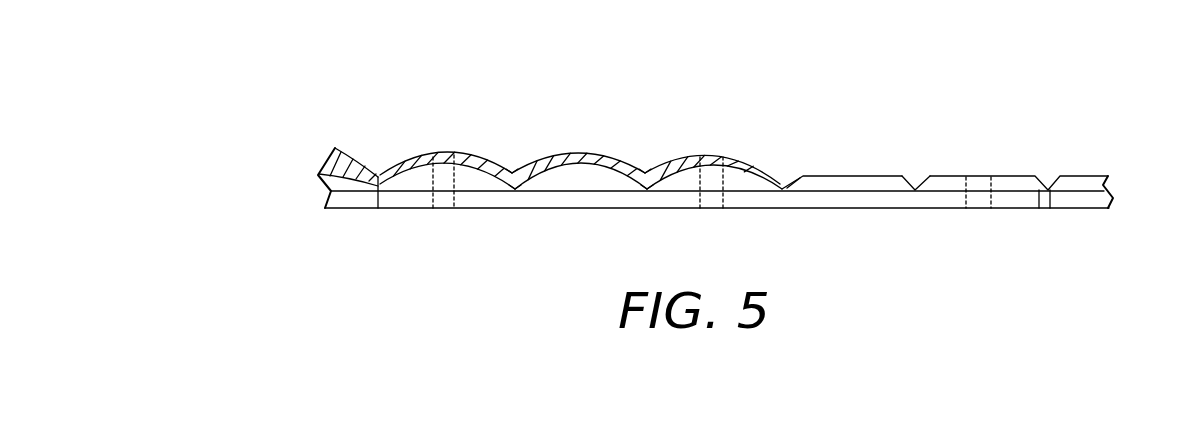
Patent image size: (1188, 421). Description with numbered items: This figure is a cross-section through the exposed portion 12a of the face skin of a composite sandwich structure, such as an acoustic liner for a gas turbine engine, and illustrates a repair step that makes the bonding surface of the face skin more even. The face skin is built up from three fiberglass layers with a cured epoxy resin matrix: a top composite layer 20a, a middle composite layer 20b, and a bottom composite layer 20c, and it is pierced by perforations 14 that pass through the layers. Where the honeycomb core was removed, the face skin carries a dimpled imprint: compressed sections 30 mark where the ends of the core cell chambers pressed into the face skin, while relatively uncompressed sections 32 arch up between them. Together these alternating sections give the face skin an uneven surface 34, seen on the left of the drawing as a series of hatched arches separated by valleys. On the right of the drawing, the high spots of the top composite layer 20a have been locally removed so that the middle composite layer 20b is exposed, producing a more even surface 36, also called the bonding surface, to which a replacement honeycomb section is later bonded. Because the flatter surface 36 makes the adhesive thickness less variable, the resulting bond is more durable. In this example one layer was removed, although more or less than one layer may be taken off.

The exposed portion 12a is at (983, 100).
The perforations 14 is at (435, 208).
The top composite layer 20a is at (533, 177).
The middle composite layer 20b is at (570, 182).
The composite layer 20c is at (592, 200).
The compressed sections 30 is at (515, 173).
The uncompressed sections 32 is at (410, 151).
The uneven surface 34 is at (552, 92).
The bonding surface 36 is at (892, 138).